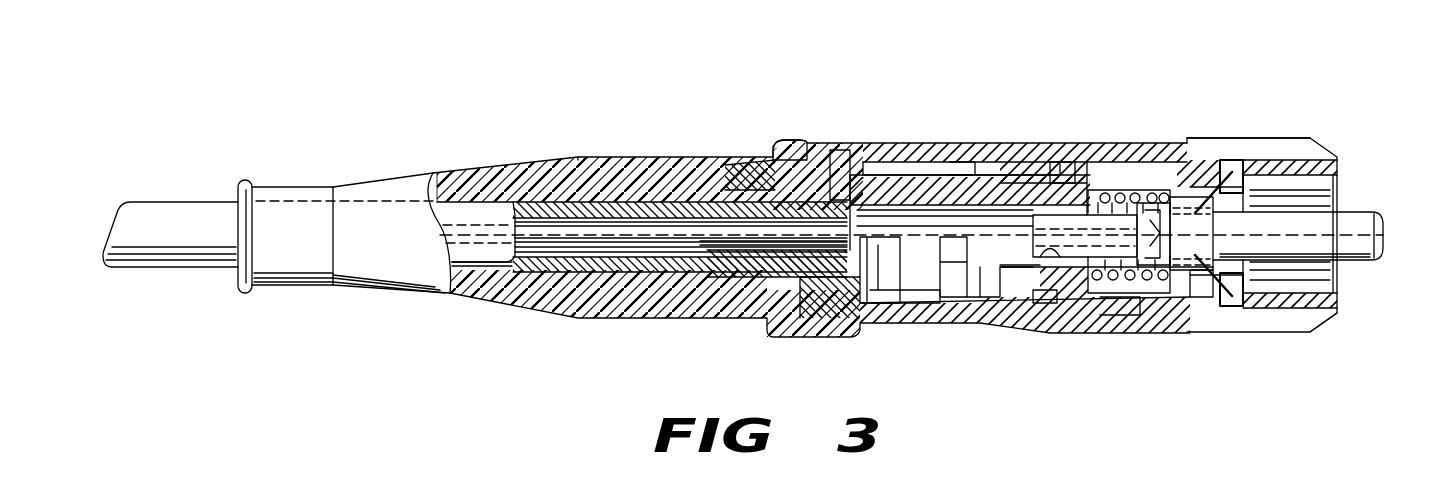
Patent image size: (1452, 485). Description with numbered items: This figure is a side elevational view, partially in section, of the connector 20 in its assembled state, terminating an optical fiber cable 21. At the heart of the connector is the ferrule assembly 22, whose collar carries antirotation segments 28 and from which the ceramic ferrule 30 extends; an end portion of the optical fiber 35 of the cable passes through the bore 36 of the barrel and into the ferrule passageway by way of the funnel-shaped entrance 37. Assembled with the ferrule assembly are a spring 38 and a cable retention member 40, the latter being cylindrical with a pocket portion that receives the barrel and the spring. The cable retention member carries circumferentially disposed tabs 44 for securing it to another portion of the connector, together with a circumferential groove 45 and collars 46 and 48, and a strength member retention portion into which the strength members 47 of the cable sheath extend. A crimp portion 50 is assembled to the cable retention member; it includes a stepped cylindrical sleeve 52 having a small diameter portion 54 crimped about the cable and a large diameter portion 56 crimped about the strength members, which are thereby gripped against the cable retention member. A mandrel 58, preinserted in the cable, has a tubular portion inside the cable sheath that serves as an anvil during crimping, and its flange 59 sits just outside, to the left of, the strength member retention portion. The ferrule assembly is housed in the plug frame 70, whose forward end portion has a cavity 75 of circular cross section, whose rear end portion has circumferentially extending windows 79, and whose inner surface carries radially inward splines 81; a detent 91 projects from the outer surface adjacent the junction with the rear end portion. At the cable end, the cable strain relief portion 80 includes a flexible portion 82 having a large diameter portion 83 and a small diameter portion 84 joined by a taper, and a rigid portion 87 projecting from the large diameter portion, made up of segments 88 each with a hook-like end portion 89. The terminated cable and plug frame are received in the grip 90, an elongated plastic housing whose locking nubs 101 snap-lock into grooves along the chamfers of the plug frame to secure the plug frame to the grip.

The connector 20 is at (1322, 112).
The optical fiber cable 21 is at (166, 207).
The ferrule assembly 22 is at (1383, 229).
The segments 28 is at (1190, 300).
The ferrule 30 is at (1352, 262).
The optical fiber 35 is at (1348, 233).
The bore 36 is at (1090, 328).
The entrance 37 is at (1153, 318).
The spring 38 is at (1100, 190).
The cable retention member 40 is at (1044, 303).
The tabs 44 is at (1053, 290).
The circumferential groove 45 is at (980, 162).
The collar 46 is at (1020, 160).
The strength members 47 is at (611, 255).
The collar 48 is at (961, 163).
The crimp portion 50 is at (831, 163).
The stepped cylindrical sleeve 52 is at (801, 323).
The small diameter portion 54 is at (778, 182).
The large diameter portion 56 is at (885, 172).
The mandrel 58 is at (713, 253).
The flange 59 is at (873, 303).
The plug frame 70 is at (1124, 313).
The cavity 75 is at (1340, 275).
The windows 79 is at (1060, 165).
The cable strain relief portion 80 is at (584, 156).
The splines 81 is at (1193, 198).
The flexible portion 82 is at (660, 166).
The large diameter portion 83 is at (400, 183).
The small diameter portion 84 is at (296, 176).
The rigid portion 87 is at (724, 172).
The segments 88 is at (893, 305).
The hook-like end portion 89 is at (977, 303).
The grip 90 is at (1333, 152).
The detent 91 is at (1238, 160).
The locking nubs 101 is at (1288, 170).